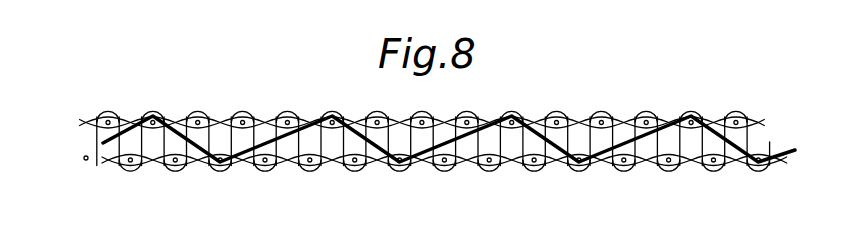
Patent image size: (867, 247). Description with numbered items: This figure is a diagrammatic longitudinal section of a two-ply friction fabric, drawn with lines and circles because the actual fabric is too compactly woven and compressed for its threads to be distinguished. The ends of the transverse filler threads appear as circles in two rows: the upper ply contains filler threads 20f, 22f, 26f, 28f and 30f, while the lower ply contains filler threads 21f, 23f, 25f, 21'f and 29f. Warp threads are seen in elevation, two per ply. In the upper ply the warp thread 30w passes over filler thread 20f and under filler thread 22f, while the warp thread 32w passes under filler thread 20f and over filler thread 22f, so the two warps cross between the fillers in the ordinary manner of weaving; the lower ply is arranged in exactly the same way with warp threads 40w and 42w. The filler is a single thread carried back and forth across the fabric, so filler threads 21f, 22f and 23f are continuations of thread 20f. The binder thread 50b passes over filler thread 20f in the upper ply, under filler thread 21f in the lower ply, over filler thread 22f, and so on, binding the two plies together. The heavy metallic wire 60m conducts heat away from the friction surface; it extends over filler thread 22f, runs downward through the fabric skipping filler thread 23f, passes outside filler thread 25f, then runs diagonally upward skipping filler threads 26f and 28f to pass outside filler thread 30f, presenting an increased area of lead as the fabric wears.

The warp thread 30w is at (97, 119).
The warp thread 32w is at (86, 122).
The warp thread 40w is at (98, 162).
The warp thread 42w is at (104, 164).
The metallic wire 60m is at (105, 140).
The binder thread 50b is at (84, 158).
The filler thread 20f is at (108, 120).
The filler thread 22f is at (153, 120).
The filler thread 21f is at (199, 120).
The filler thread 26f is at (243, 121).
The filler thread 28f is at (288, 121).
The filler thread 30f is at (333, 118).
The filler thread 23f is at (175, 167).
The filler thread 25f is at (220, 167).
The filler thread 21'f is at (275, 190).
The filler thread 29f is at (312, 165).